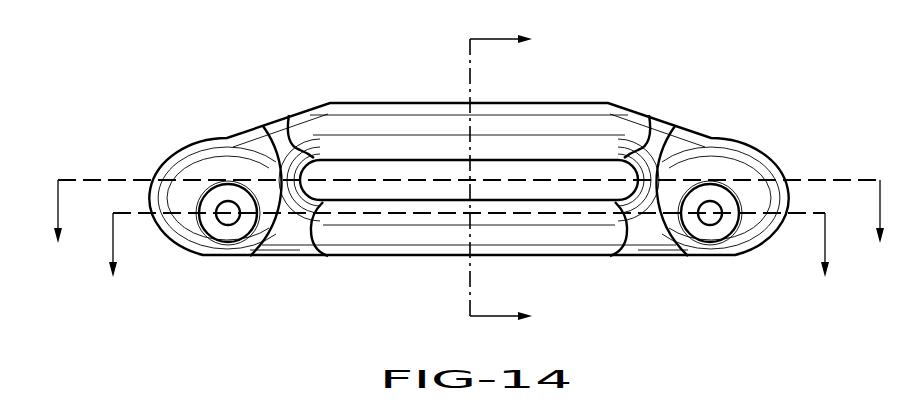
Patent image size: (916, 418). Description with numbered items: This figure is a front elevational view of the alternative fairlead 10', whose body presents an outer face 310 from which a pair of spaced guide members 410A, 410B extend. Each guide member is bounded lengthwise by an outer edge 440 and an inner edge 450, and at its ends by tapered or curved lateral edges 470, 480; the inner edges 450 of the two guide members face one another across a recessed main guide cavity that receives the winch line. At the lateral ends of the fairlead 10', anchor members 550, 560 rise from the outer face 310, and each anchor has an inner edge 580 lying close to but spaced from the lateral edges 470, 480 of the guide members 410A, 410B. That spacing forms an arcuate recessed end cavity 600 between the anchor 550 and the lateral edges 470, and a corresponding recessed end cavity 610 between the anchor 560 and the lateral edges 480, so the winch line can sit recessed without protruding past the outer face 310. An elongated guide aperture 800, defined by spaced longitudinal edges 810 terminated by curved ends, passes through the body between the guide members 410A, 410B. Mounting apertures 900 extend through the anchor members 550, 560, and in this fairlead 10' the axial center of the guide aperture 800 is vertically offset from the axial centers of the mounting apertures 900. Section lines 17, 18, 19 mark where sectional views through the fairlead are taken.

The fairlead 10' is at (132, 61).
The outer face 310 is at (447, 233).
The guide member 410A is at (572, 130).
The guide member 410B is at (582, 233).
The outer edge 440 is at (432, 102).
The inner edge 450 is at (437, 158).
The lateral edge 470 is at (283, 160).
The lateral edge 480 is at (657, 132).
The anchor member 550 is at (192, 232).
The anchor member 560 is at (747, 232).
The inner edge 580 is at (277, 155).
The recessed end cavity 600 is at (258, 116).
The recessed end cavity 610 is at (684, 116).
The guide aperture 800 is at (362, 203).
The longitudinal edges 810 is at (358, 158).
The mounting aperture 900 is at (228, 212).
The section line 17 is at (471, 231).
The section line 18 is at (471, 264).
The section line 19 is at (522, 179).